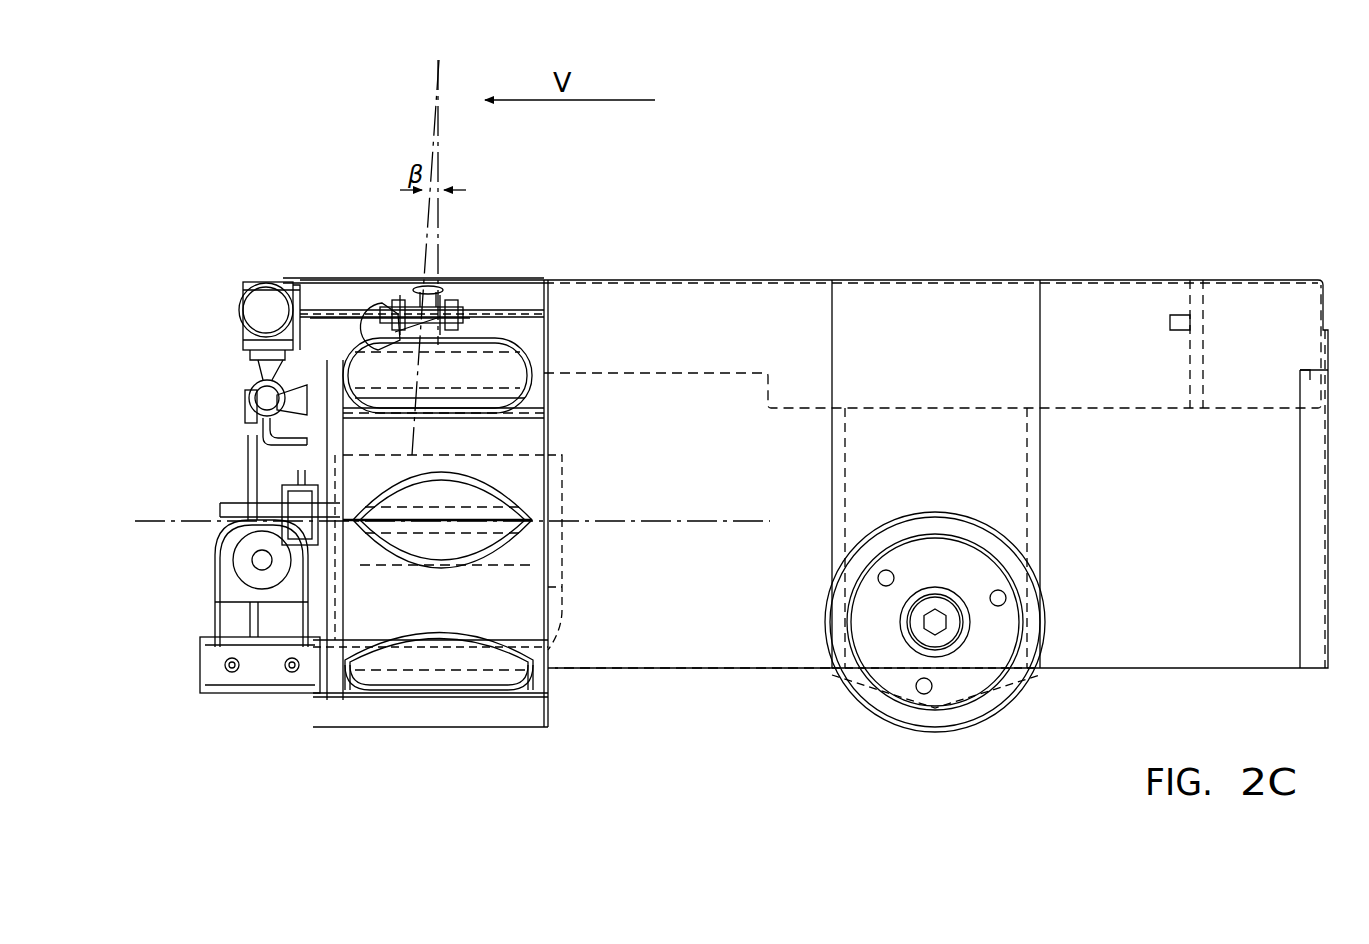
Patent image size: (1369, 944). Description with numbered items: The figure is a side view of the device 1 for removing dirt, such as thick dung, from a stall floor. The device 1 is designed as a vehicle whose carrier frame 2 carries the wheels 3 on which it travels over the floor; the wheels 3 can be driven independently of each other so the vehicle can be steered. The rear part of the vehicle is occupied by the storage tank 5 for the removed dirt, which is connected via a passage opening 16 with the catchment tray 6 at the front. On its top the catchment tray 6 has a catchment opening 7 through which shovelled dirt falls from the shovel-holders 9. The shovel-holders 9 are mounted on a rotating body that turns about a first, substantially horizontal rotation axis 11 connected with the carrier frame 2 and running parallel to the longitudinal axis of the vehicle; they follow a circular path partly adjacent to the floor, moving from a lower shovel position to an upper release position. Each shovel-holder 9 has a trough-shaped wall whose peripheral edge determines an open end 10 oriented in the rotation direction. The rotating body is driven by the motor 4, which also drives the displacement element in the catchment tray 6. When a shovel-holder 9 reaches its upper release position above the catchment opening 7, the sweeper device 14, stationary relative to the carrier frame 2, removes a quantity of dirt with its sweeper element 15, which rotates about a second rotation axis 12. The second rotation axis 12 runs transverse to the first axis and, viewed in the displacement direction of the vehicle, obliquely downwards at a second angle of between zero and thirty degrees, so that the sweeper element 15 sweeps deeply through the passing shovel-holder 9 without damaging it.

The device 1 is at (1170, 243).
The carrier frame 2 is at (745, 655).
The wheels 3 is at (893, 710).
The motor 4 is at (240, 322).
The storage tank 5 is at (800, 343).
The catchment tray 6 is at (546, 437).
The catchment opening 7 is at (495, 410).
The shovel-holders 9 is at (508, 367).
The open end 10 is at (362, 300).
The first rotation axis 11 is at (148, 520).
The second rotation axis 12 is at (425, 268).
The sweeper device 14 is at (367, 328).
The sweeper element 15 is at (367, 328).
The passage opening 16 is at (501, 433).